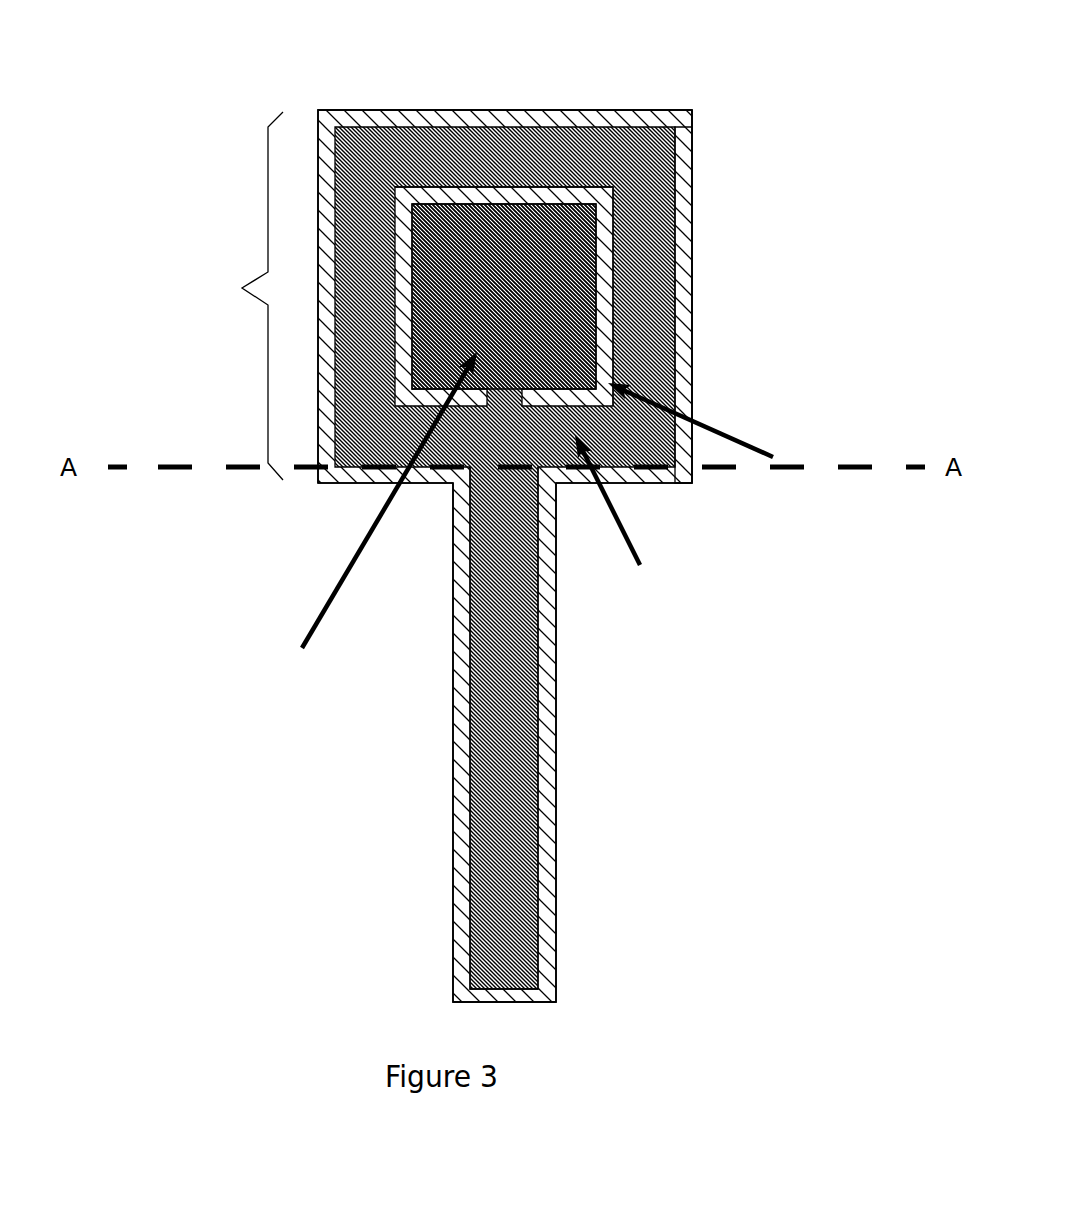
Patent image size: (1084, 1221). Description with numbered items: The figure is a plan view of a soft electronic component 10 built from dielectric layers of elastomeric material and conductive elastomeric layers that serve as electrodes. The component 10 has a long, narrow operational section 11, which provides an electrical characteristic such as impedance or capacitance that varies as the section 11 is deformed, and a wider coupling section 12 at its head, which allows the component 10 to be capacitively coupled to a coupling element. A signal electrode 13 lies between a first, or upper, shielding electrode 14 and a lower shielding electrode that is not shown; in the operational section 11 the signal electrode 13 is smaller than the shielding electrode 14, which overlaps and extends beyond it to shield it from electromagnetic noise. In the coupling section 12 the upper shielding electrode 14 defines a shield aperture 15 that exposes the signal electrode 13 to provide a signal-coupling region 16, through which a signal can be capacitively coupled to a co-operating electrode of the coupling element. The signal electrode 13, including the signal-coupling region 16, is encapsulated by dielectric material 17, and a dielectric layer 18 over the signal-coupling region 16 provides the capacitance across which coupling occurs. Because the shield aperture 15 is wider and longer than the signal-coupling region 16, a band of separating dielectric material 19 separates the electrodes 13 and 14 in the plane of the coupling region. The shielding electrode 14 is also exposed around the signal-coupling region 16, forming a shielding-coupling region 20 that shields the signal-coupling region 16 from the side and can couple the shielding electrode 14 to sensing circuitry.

The electronic component 10 is at (799, 119).
The operational section 11 is at (614, 789).
The coupling section 12 is at (734, 263).
The signal electrode 13 is at (470, 245).
The first shielding electrode 14 is at (377, 442).
The shield aperture 15 is at (618, 186).
The signal-coupling region 16 is at (591, 232).
The dielectric material 17 is at (557, 748).
The dielectric layer 18 is at (707, 303).
The band of separating dielectric material 19 is at (605, 330).
The shielding-coupling region 20 is at (360, 278).